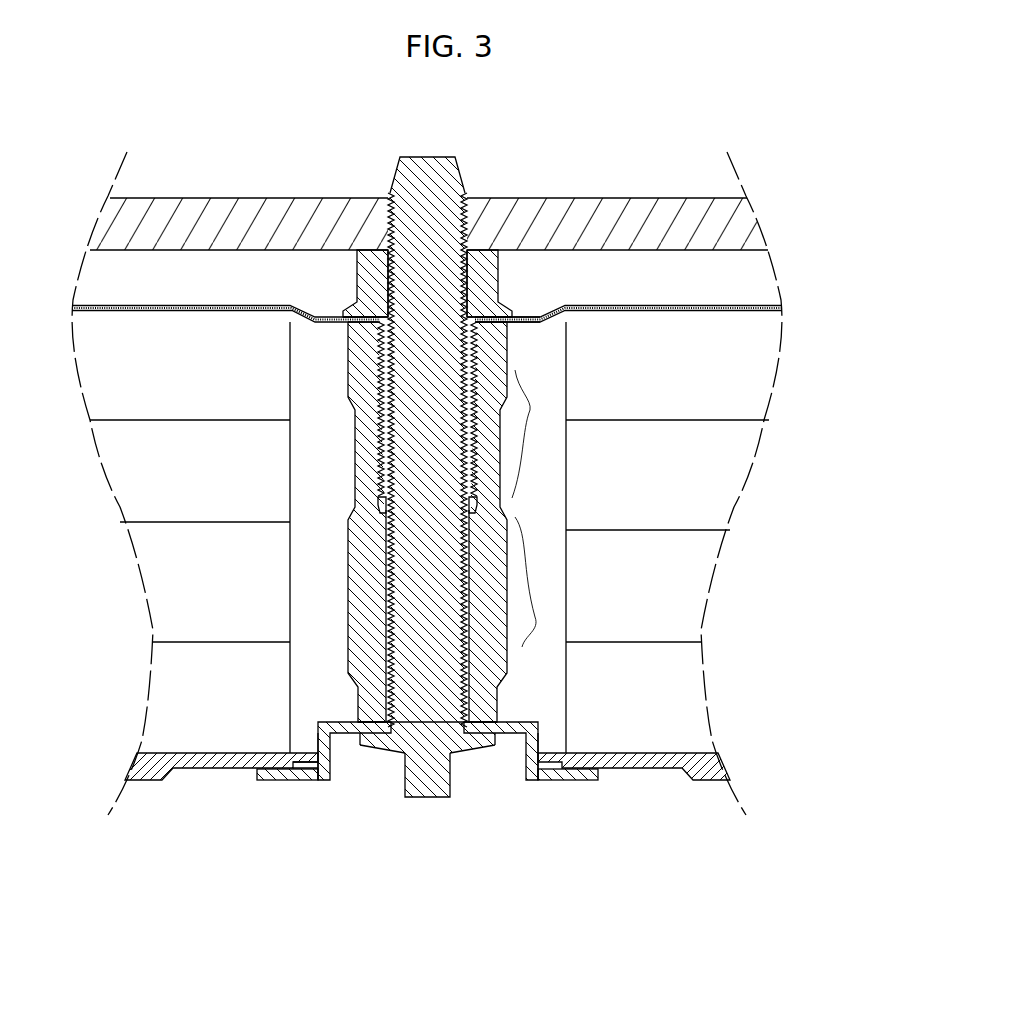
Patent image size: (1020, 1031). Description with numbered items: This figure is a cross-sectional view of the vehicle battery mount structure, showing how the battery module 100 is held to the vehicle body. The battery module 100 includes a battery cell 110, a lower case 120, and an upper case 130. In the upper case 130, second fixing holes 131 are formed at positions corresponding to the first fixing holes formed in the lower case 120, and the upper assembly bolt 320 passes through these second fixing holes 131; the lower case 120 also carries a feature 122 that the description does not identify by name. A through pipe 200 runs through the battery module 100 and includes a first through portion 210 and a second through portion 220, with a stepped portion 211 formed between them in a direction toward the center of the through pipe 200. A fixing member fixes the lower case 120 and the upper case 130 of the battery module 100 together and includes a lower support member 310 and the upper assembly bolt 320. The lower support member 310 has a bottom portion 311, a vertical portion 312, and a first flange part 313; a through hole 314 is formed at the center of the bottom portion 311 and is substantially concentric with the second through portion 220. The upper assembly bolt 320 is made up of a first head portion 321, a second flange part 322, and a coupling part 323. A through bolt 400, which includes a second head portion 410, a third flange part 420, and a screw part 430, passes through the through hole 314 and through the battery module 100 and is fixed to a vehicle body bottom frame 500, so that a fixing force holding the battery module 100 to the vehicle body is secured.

The battery module 100 is at (423, 555).
The battery cell 110 is at (173, 592).
The lower case 120 is at (222, 768).
The lower plate opening 122 is at (313, 760).
The upper case 130 is at (757, 305).
The second fixing hole 131 is at (463, 297).
The through pipe 200 is at (435, 508).
The first through portion 210 is at (530, 412).
The stepped portion 211 is at (377, 488).
The second through portion 220 is at (537, 615).
The lower support member 310 is at (519, 808).
The bottom portion 311 is at (503, 735).
The vertical portion 312 is at (523, 757).
The first flange part 313 is at (568, 766).
The through hole 314 is at (470, 722).
The upper assembly bolt 320 is at (332, 226).
The first head portion 321 is at (353, 315).
The second flange part 322 is at (328, 325).
The coupling part 323 is at (377, 350).
The through bolt 400 is at (390, 546).
The second head portion 410 is at (428, 797).
The third flange part 420 is at (387, 747).
The screw part 430 is at (370, 727).
The vehicle body bottom frame 500 is at (587, 227).